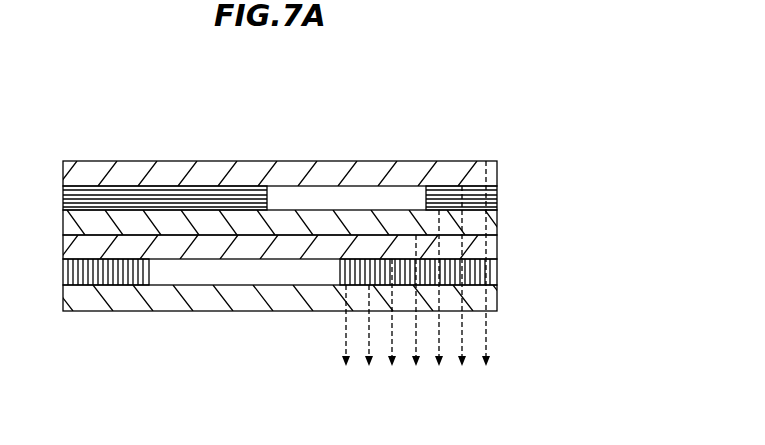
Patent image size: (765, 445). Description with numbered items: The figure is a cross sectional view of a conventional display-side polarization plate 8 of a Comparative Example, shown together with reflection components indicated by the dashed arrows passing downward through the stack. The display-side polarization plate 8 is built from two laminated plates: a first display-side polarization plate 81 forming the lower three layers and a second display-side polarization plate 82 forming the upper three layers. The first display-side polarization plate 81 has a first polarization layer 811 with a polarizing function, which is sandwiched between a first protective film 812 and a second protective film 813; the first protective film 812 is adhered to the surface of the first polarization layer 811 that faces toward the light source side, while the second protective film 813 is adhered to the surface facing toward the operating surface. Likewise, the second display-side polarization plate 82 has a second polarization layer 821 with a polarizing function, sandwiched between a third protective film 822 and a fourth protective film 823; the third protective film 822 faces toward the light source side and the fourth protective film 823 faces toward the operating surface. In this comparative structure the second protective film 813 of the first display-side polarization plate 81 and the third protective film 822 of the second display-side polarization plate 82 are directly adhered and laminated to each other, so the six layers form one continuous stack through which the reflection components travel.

The display-side polarization plate 8 is at (335, 228).
The first display-side polarization plate 81 is at (319, 271).
The second display-side polarization plate 82 is at (318, 190).
The first polarization layer 811 is at (490, 278).
The first protective film 812 is at (316, 298).
The second protective film 813 is at (490, 254).
The second polarization layer 821 is at (490, 193).
The third protective film 822 is at (304, 220).
The fourth protective film 823 is at (490, 171).